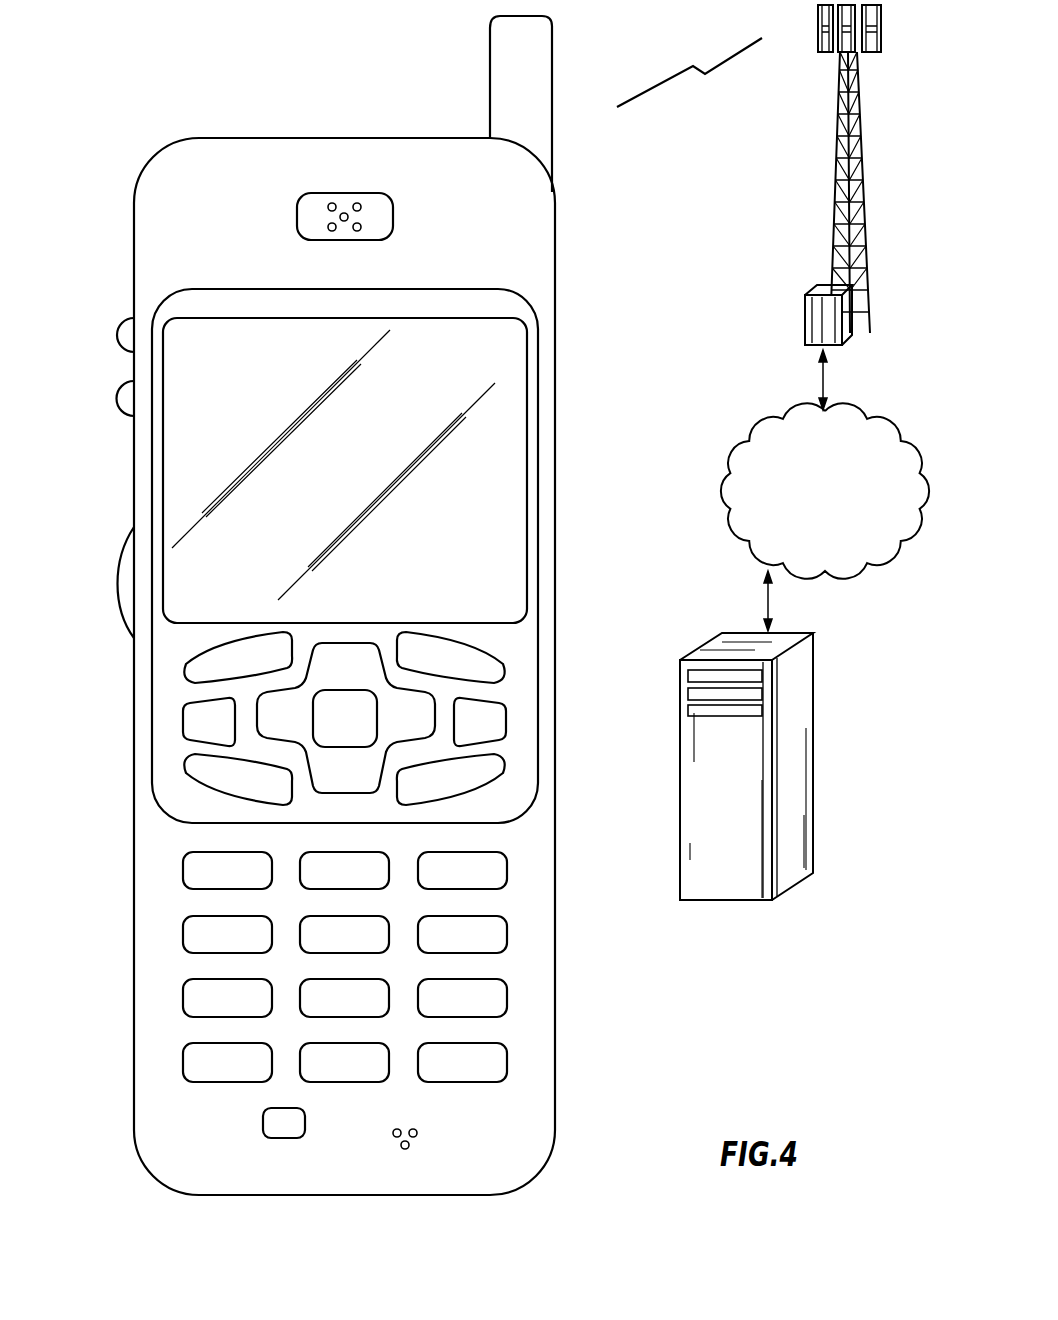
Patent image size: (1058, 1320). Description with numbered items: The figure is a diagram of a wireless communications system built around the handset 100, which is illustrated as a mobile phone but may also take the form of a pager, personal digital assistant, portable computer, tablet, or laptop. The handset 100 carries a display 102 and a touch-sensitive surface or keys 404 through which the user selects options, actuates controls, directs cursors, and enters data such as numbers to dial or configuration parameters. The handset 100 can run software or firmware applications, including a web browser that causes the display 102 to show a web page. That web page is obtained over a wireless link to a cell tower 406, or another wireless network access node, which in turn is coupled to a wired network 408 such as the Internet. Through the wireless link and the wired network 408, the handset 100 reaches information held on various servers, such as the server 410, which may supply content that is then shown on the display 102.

The handset 100 is at (153, 1173).
The display 102 is at (528, 365).
The keys 404 is at (568, 813).
The cell tower 406 is at (836, 144).
The wired network 408 is at (846, 509).
The server 410 is at (748, 903).